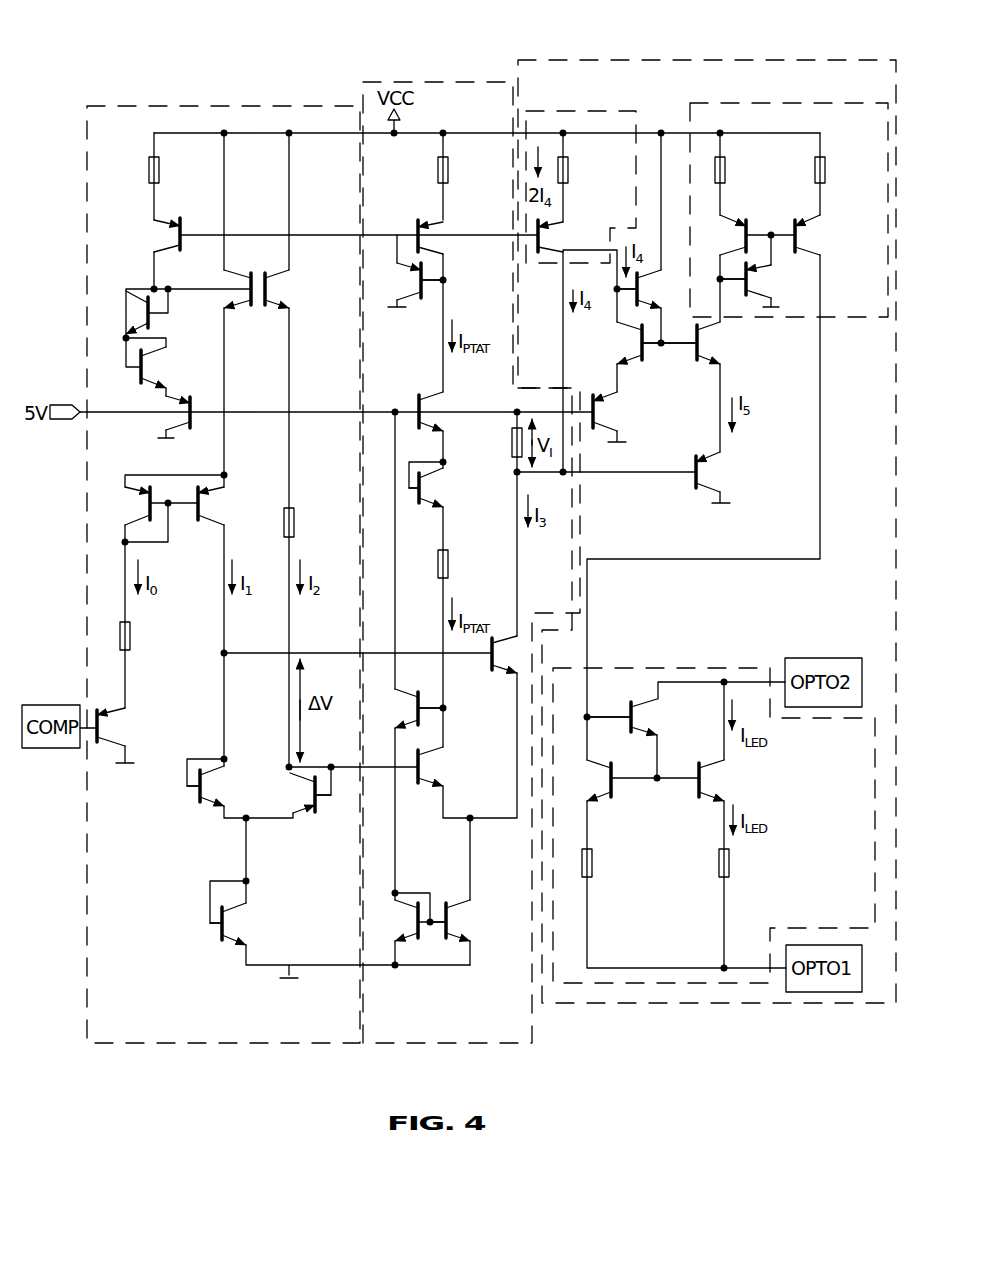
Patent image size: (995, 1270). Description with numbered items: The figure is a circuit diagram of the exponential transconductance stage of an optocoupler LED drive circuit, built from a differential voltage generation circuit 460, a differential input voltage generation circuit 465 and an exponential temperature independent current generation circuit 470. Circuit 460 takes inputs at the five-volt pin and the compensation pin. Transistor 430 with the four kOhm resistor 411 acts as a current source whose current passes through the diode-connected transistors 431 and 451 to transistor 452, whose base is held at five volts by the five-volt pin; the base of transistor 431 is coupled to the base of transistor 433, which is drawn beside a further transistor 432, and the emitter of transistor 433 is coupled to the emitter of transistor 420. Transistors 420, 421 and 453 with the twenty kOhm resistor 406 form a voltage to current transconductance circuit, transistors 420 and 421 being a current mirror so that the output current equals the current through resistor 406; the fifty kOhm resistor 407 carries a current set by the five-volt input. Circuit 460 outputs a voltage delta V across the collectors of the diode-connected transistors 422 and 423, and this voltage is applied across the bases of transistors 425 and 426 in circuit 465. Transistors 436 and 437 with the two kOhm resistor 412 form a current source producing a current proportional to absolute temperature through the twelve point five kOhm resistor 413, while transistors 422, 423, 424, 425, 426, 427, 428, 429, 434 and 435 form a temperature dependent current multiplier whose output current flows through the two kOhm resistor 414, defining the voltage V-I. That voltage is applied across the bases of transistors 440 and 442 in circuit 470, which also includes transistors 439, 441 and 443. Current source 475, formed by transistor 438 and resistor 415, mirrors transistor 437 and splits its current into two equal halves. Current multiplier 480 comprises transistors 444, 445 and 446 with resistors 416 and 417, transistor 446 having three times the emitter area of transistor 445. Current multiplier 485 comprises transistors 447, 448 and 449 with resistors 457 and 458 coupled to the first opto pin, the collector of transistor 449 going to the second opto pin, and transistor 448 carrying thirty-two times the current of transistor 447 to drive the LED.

The resistor 406 is at (130, 638).
The resistor 407 is at (295, 509).
The resistor 411 is at (160, 172).
The resistor 412 is at (449, 172).
The resistor 413 is at (447, 550).
The resistor 414 is at (511, 433).
The resistor 415 is at (569, 172).
The resistor 416 is at (726, 172).
The resistor 417 is at (826, 157).
The transistor 420 is at (136, 513).
The transistor 421 is at (217, 514).
The transistor 422 is at (212, 779).
The transistor 423 is at (306, 789).
The transistor 424 is at (238, 922).
The transistor 425 is at (433, 757).
The transistor 426 is at (493, 677).
The transistor 427 is at (412, 700).
The transistor 428 is at (412, 912).
The transistor 429 is at (462, 912).
The transistor 430 is at (165, 246).
The transistor 431 is at (138, 304).
The transistor 432 is at (279, 281).
The transistor 433 is at (246, 271).
The transistor 434 is at (419, 510).
The transistor 435 is at (434, 396).
The transistor 436 is at (410, 287).
The transistor 437 is at (436, 216).
The transistor 438 is at (556, 252).
The transistor 439 is at (646, 280).
The transistor 440 is at (617, 402).
The transistor 441 is at (621, 338).
The transistor 442 is at (710, 487).
The transistor 443 is at (706, 339).
The transistor 444 is at (764, 298).
The transistor 445 is at (740, 249).
The transistor 446 is at (814, 250).
The transistor 447 is at (603, 771).
The transistor 448 is at (714, 773).
The transistor 449 is at (647, 711).
The transistor 451 is at (158, 360).
The transistor 452 is at (176, 434).
The transistor 453 is at (116, 746).
The resistor 457 is at (593, 860).
The resistor 458 is at (730, 871).
The differential voltage generation circuit 460 is at (160, 105).
The differential input voltage generation circuit 465 is at (447, 78).
The exponential temperature independent current generation circuit 470 is at (657, 60).
The current source 475 is at (595, 110).
The current multiplier 480 is at (797, 102).
The current multiplier 485 is at (675, 672).